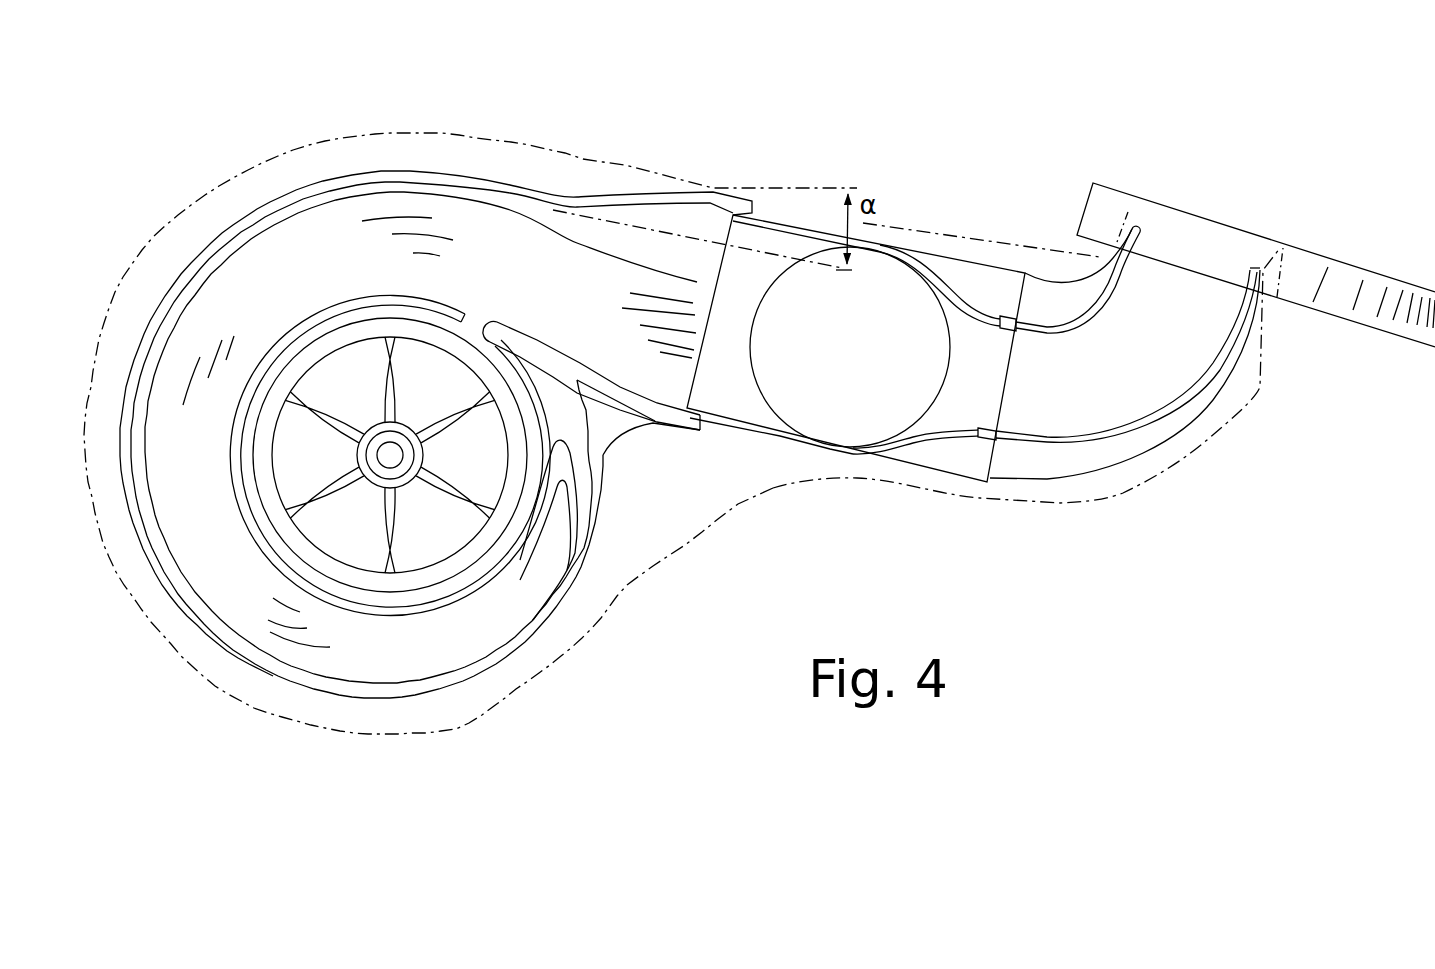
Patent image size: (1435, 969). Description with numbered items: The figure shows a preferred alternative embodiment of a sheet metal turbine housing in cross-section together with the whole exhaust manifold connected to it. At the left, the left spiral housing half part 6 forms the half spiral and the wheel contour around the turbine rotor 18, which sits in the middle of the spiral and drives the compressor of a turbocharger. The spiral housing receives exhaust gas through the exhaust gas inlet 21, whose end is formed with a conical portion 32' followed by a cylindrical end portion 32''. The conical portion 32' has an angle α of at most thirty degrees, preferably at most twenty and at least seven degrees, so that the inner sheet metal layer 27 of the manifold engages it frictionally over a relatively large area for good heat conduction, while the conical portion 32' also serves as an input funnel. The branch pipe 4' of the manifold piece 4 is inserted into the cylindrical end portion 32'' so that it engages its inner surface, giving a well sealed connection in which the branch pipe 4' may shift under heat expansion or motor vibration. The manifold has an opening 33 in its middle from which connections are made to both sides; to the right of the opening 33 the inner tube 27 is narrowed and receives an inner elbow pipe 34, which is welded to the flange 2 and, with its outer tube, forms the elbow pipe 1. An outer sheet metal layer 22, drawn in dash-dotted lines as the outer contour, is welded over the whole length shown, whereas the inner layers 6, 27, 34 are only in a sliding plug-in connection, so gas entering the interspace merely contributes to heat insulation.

The elbow pipe 1 is at (1186, 550).
The flange 2 is at (1104, 200).
The manifold piece 4 is at (850, 283).
The branch pipe (connection conduit) 4' is at (856, 348).
The left spiral housing half part 6 is at (414, 171).
The turbine rotor 18 is at (352, 529).
The exhaust gas inlet 21 is at (653, 444).
The outer sheet metal layer 22 is at (326, 137).
The inner sheet metal layer (inner tube) 27 is at (801, 230).
The conical portion 32' is at (581, 141).
The cylindrical end portion 32'' is at (606, 236).
The opening 33 is at (830, 436).
The inner elbow pipe 34 is at (1254, 300).